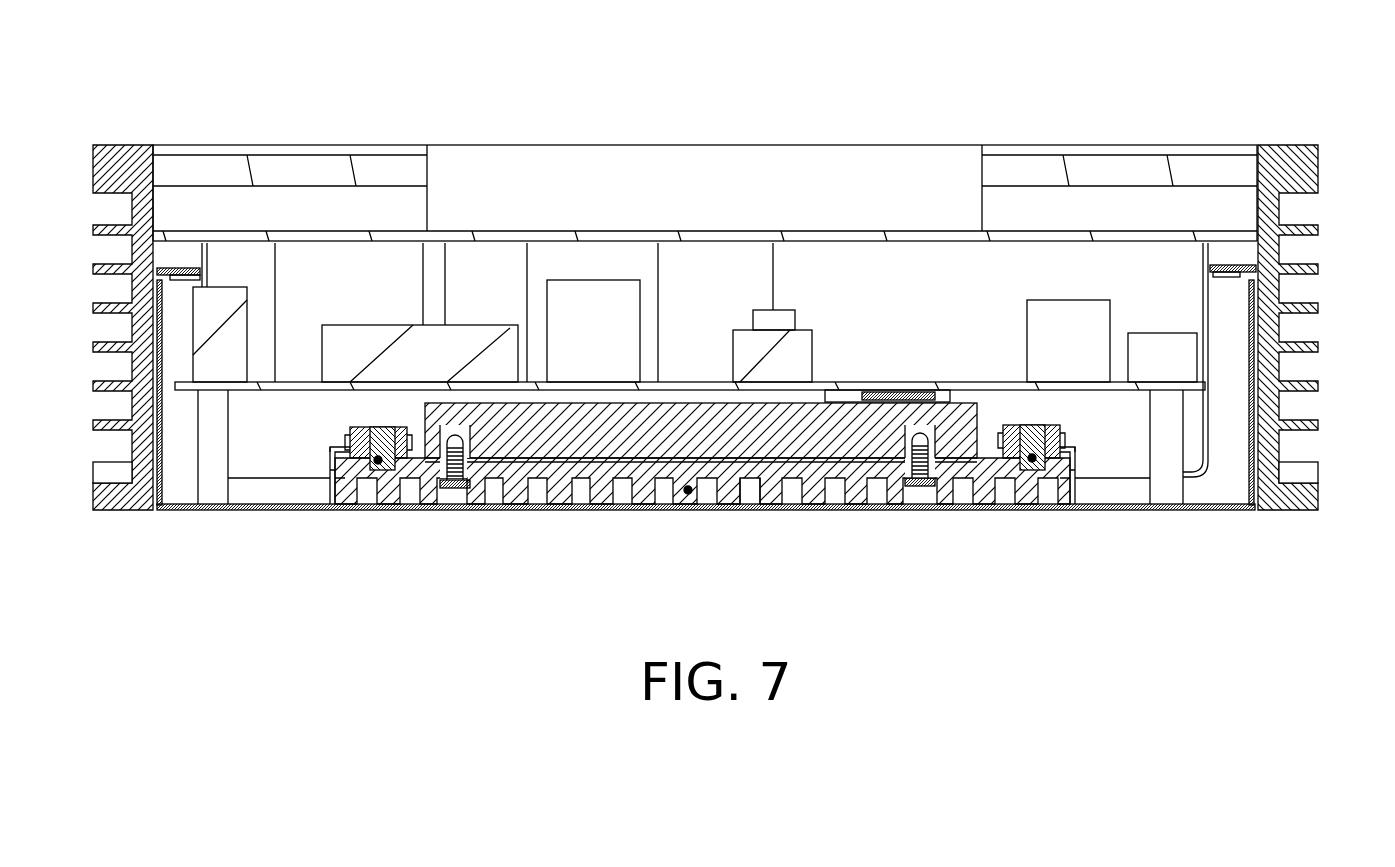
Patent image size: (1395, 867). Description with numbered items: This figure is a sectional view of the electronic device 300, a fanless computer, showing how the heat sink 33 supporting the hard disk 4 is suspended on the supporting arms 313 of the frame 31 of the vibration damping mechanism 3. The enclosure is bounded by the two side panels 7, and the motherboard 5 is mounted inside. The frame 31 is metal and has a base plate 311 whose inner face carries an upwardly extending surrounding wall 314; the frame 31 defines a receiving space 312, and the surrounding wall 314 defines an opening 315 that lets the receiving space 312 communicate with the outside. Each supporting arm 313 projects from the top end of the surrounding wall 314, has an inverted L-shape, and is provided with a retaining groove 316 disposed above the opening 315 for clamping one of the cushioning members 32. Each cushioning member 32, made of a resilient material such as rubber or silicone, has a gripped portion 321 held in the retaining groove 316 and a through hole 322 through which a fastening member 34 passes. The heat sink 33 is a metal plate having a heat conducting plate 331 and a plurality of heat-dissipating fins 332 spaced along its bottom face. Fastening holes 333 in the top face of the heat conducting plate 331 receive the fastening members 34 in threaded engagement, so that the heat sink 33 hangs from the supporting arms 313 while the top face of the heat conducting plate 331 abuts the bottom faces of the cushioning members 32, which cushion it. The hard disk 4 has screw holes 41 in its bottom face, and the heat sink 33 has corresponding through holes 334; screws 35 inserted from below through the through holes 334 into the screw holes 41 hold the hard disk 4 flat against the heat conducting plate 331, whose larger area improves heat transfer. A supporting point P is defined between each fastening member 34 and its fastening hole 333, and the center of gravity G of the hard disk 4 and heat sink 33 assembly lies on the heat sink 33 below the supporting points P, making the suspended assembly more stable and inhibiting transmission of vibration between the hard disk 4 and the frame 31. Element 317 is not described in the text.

The electronic device 300 is at (137, 130).
The side panels 7 is at (118, 170).
The motherboard 5 is at (425, 368).
The hard disk 4 is at (600, 420).
The vibration damping mechanism 3 is at (1125, 428).
The frame 31 is at (1250, 512).
The base plate 311 is at (1300, 508).
The receiving space 312 is at (1128, 445).
The supporting arms 313 is at (356, 430).
The surrounding wall 314 is at (340, 470).
The opening 315 is at (300, 503).
The retaining groove 316 is at (400, 480).
The standoff 317 is at (210, 458).
The cushioning members 32 is at (345, 472).
The gripped portion 321 is at (382, 428).
The through hole 322 is at (333, 470).
The heat sink 33 is at (622, 493).
The heat conducting plate 331 is at (727, 468).
The heat-dissipating fins 332 is at (812, 497).
The fastening holes 333 is at (374, 472).
The through holes 334 is at (470, 486).
The fastening members 34 is at (360, 432).
The screws 35 is at (453, 492).
The screw holes 41 is at (460, 430).
The supporting point P is at (380, 465).
The center of gravity G is at (687, 494).